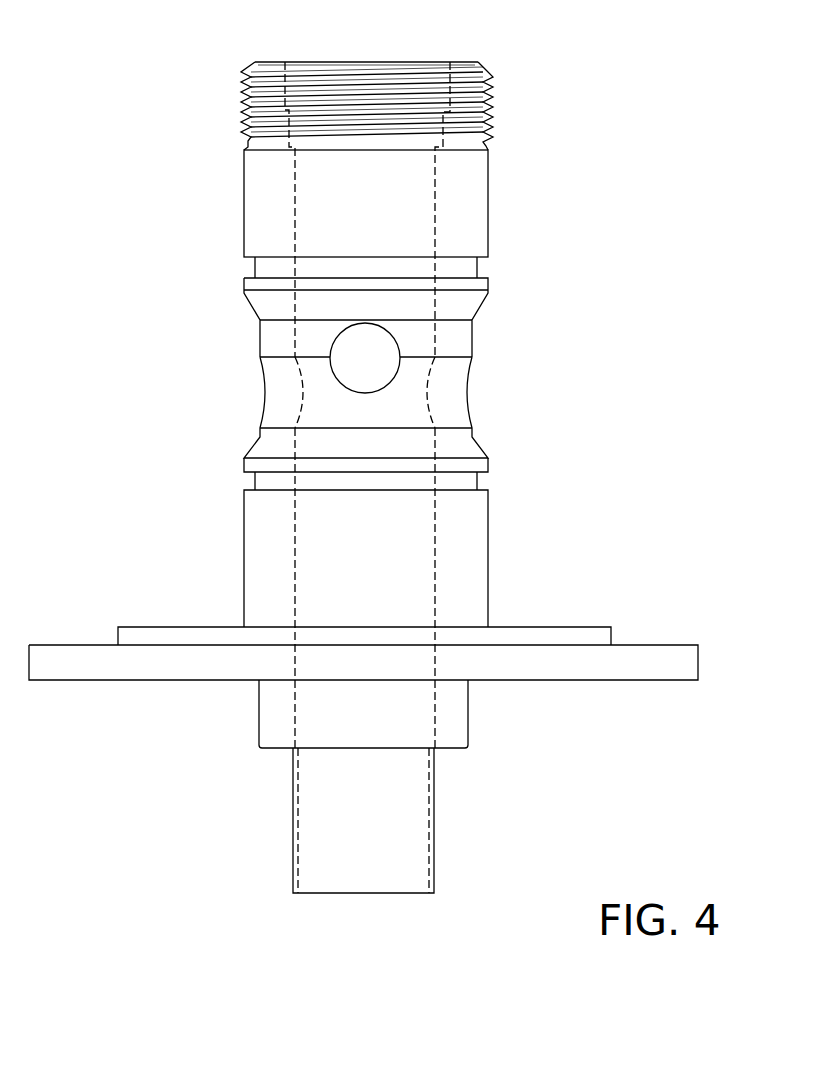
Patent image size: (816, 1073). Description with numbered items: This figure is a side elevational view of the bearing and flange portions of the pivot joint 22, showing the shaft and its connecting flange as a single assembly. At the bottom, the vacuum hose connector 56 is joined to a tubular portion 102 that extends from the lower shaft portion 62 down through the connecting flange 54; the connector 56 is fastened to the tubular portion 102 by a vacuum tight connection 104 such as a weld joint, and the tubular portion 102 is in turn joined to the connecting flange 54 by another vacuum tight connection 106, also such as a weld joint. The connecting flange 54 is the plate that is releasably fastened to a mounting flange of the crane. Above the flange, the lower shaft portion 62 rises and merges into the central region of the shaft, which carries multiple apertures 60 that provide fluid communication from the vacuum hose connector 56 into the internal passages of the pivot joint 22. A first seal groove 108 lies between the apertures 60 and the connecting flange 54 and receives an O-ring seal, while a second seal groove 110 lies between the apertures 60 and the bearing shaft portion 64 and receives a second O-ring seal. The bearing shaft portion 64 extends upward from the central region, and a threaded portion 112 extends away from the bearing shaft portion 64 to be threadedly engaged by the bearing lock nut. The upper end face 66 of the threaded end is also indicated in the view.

The first pivot joint 22 is at (637, 103).
The top end face 66 is at (283, 72).
The threaded portion 112 is at (490, 98).
The bearing shaft portion 64 is at (255, 173).
The second seal groove 110 is at (477, 270).
The apertures 60 is at (405, 370).
The first seal groove 108 is at (477, 483).
The lower shaft portion 62 is at (487, 561).
The connecting flange 54 is at (47, 667).
The vacuum tight connection 106 is at (468, 682).
The tubular portion 102 is at (258, 713).
The vacuum tight connection 104 is at (434, 752).
The vacuum hose connector 56 is at (292, 819).